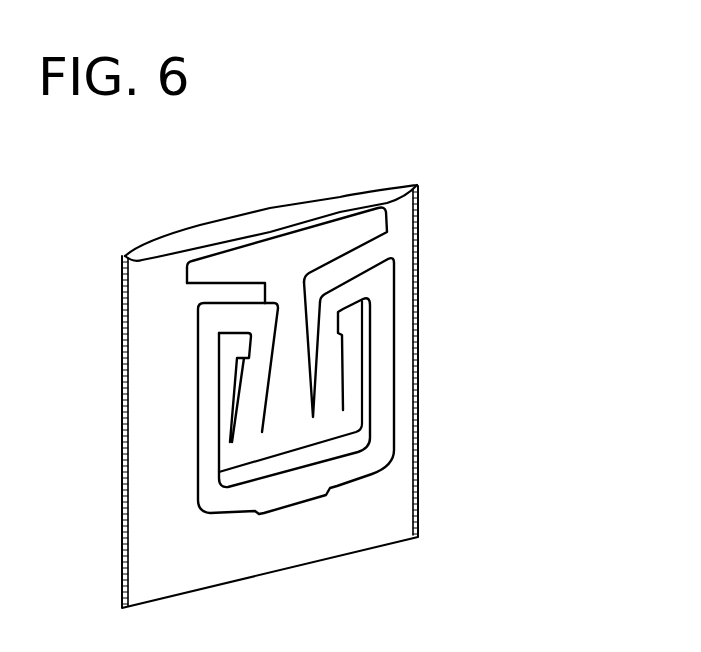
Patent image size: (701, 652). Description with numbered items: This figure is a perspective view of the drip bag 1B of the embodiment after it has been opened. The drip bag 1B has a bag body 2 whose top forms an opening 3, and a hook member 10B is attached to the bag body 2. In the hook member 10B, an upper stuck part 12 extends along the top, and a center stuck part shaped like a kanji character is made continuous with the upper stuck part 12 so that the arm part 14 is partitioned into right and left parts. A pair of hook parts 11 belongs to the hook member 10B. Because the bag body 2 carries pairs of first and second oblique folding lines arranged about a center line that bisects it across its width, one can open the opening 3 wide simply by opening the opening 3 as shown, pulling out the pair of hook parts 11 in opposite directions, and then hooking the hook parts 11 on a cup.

The drip bag 1B is at (620, 579).
The bag body 2 is at (156, 564).
The opening 3 is at (278, 218).
The hook member 10B is at (548, 215).
The hook part 11 is at (382, 418).
The upper stuck part 12 is at (375, 227).
The arm part 14 is at (328, 363).